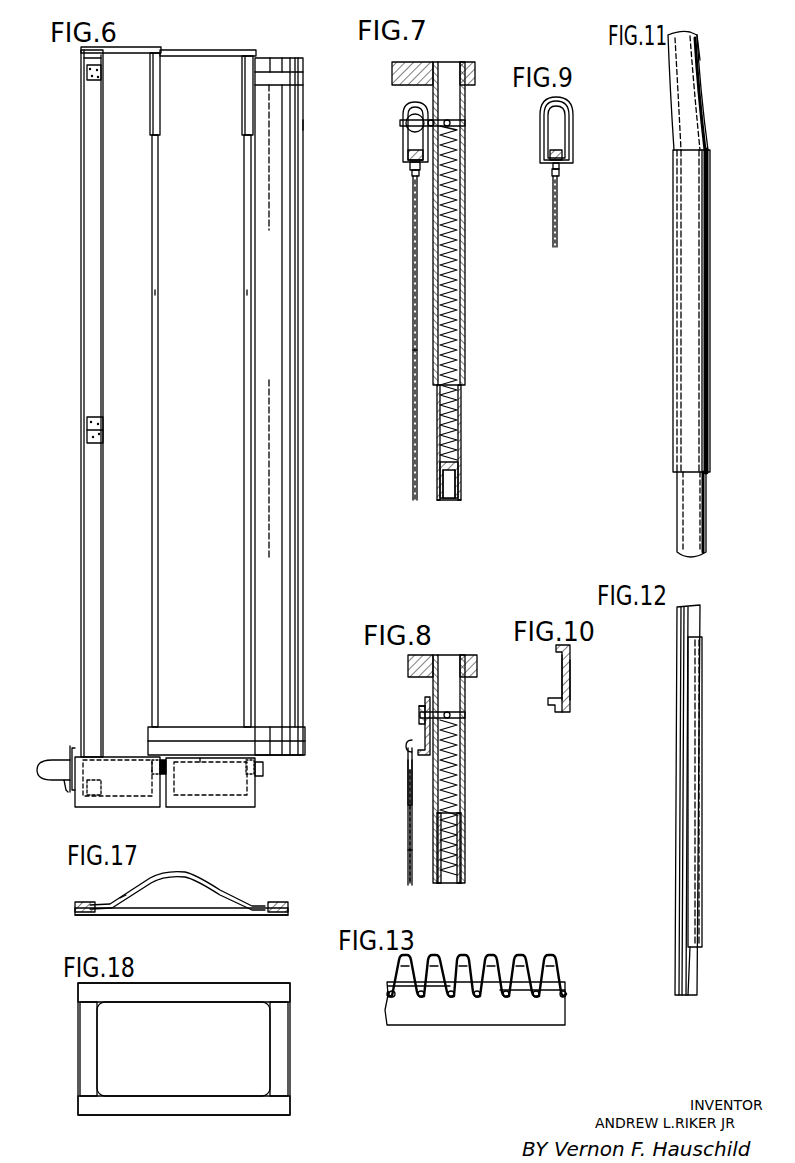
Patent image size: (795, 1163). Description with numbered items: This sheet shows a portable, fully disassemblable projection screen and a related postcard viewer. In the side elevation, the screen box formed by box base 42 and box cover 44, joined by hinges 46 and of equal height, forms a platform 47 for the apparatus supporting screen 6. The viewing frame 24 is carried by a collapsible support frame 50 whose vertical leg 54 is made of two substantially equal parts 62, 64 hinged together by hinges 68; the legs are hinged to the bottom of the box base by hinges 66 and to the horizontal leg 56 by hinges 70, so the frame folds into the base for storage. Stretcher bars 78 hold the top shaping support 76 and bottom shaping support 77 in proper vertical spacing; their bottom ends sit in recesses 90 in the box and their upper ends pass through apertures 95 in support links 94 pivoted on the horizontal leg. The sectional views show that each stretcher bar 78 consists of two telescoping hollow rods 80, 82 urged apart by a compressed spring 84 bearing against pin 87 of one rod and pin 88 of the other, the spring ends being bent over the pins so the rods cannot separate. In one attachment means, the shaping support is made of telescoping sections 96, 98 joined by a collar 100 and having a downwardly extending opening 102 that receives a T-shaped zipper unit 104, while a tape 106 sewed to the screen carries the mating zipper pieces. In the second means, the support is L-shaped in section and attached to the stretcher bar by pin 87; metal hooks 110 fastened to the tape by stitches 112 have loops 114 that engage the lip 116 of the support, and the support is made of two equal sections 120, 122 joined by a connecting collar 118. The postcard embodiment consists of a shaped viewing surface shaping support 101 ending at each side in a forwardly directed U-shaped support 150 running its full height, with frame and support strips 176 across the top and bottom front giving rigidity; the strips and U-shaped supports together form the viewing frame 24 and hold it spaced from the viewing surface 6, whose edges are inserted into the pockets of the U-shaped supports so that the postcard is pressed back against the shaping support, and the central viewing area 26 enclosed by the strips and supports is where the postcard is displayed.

In FIG. 6, the screen 6 is at (304, 126).
In FIG. 7, the screen 6 is at (410, 351).
In FIG. 9, the screen 6 is at (560, 230).
In FIG. 8, the screen 6 is at (405, 850).
In FIG. 17, the screen 6 is at (152, 880).
In FIG. 18, the screen 6 is at (200, 1045).
In FIG. 6, the viewing frame 24 is at (80, 64).
In FIG. 17, the viewing frame 24 is at (150, 918).
In FIG. 18, the viewing frame 24 is at (80, 1070).
In FIG. 18, the pad 26 is at (270, 1024).
In FIG. 6, the box base 42 is at (118, 768).
In FIG. 6, the box cover 44 is at (235, 800).
In FIG. 6, the hinges 46 is at (168, 768).
In FIG. 6, the platform 47 is at (225, 760).
In FIG. 6, the support frame 50 is at (78, 143).
In FIG. 6, the vertical leg 54 is at (88, 308).
In FIG. 6, the horizontal leg 56 is at (103, 62).
In FIG. 6, the vertical leg part 62 is at (88, 194).
In FIG. 6, the vertical leg part 64 is at (88, 570).
In FIG. 6, the hinges 66 is at (80, 795).
In FIG. 6, the hinges 68 is at (86, 440).
In FIG. 6, the hinges 70 is at (86, 78).
In FIG. 6, the viewing surface shaping support 76 is at (285, 58).
In FIG. 7, the viewing surface shaping support 76 is at (402, 106).
In FIG. 9, the viewing surface shaping support 76 is at (575, 110).
In FIG. 11, the viewing surface shaping support 76 is at (708, 125).
In FIG. 8, the viewing surface shaping support 76 is at (424, 700).
In FIG. 10, the viewing surface shaping support 76 is at (572, 681).
In FIG. 12, the viewing surface shaping support 76 is at (702, 616).
In FIG. 6, the bottom shaping support 77 is at (300, 760).
In FIG. 6, the stretcher bar 78 is at (258, 283).
In FIG. 7, the stretcher bar 78 is at (466, 304).
In FIG. 8, the stretcher bar 78 is at (466, 805).
In FIG. 6, the hollow rod 80 is at (160, 108).
In FIG. 7, the hollow rod 80 is at (466, 104).
In FIG. 8, the hollow rod 80 is at (466, 702).
In FIG. 6, the hollow rod 82 is at (158, 214).
In FIG. 7, the hollow rod 82 is at (464, 428).
In FIG. 8, the hollow rod 82 is at (464, 878).
In FIG. 7, the compressed spring 84 is at (462, 184).
In FIG. 8, the compressed spring 84 is at (462, 778).
In FIG. 7, the pin 87 is at (467, 125).
In FIG. 8, the pin 87 is at (467, 721).
In FIG. 7, the pin 88 is at (462, 474).
In FIG. 6, the recesses 90 is at (150, 770).
In FIG. 6, the support links 94 is at (130, 47).
In FIG. 7, the support links 94 is at (412, 64).
In FIG. 8, the support links 94 is at (470, 655).
In FIG. 7, the apertures 95 is at (448, 66).
In FIG. 8, the apertures 95 is at (443, 658).
In FIG. 11, the telescoping section 96 is at (708, 512).
In FIG. 9, the telescoping section 98 is at (565, 128).
In FIG. 11, the telescoping section 98 is at (703, 66).
In FIG. 9, the joining collar 100 is at (542, 140).
In FIG. 11, the joining collar 100 is at (711, 406).
In FIG. 17, the viewing surface shaping support 101 is at (130, 890).
In FIG. 7, the downwardly extending opening 102 is at (408, 164).
In FIG. 9, the downwardly extending opening 102 is at (554, 160).
In FIG. 7, the T-shaped unit 104 is at (412, 174).
In FIG. 9, the T-shaped unit 104 is at (560, 166).
In FIG. 7, the tape 106 is at (412, 192).
In FIG. 9, the tape 106 is at (560, 178).
In FIG. 8, the tape 106 is at (406, 780).
In FIG. 13, the tape 106 is at (566, 1010).
In FIG. 8, the metal hooks 110 is at (406, 757).
In FIG. 13, the metal hooks 110 is at (560, 970).
In FIG. 13, the stitches 112 is at (428, 994).
In FIG. 8, the loops 114 is at (412, 738).
In FIG. 13, the loops 114 is at (433, 952).
In FIG. 8, the lip 116 is at (404, 744).
In FIG. 10, the lip 116 is at (552, 694).
In FIG. 10, the connecting collar 118 is at (571, 650).
In FIG. 12, the connecting collar 118 is at (704, 755).
In FIG. 10, the section 120 is at (560, 664).
In FIG. 12, the section 120 is at (676, 620).
In FIG. 12, the section 122 is at (700, 984).
In FIG. 17, the U-shaped support 150 is at (76, 902).
In FIG. 18, the U-shaped support 150 is at (278, 1056).
In FIG. 17, the frame and support strips 176 is at (236, 918).
In FIG. 18, the frame and support strips 176 is at (262, 988).